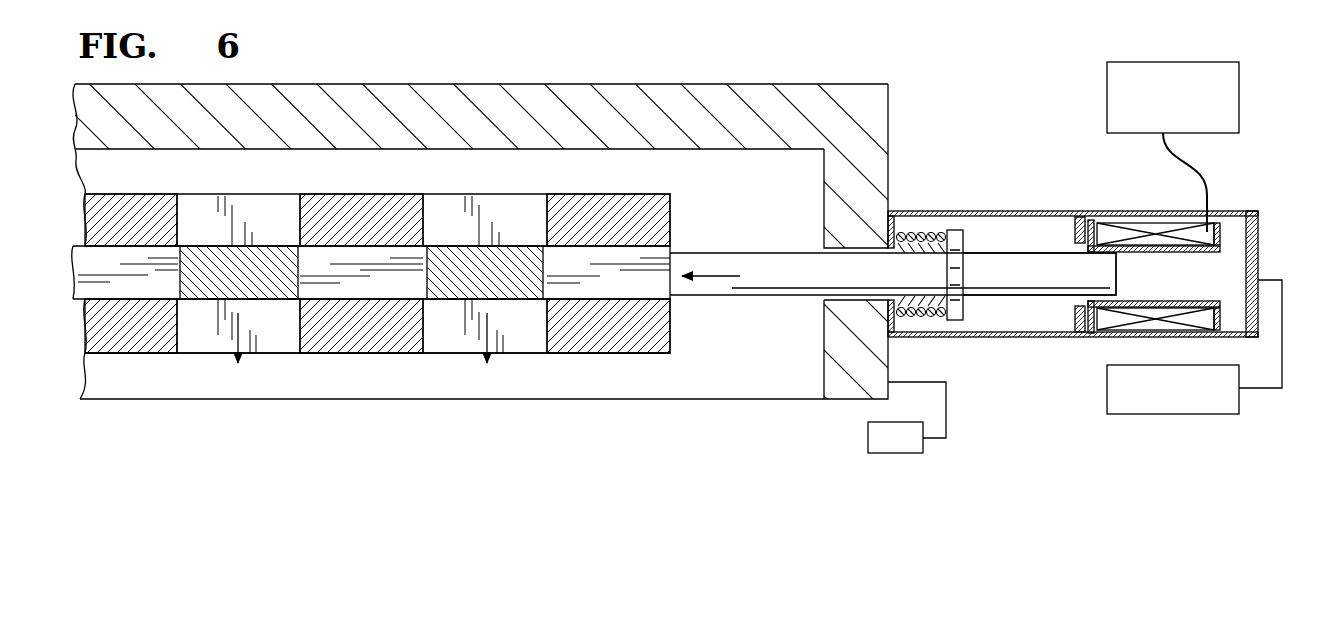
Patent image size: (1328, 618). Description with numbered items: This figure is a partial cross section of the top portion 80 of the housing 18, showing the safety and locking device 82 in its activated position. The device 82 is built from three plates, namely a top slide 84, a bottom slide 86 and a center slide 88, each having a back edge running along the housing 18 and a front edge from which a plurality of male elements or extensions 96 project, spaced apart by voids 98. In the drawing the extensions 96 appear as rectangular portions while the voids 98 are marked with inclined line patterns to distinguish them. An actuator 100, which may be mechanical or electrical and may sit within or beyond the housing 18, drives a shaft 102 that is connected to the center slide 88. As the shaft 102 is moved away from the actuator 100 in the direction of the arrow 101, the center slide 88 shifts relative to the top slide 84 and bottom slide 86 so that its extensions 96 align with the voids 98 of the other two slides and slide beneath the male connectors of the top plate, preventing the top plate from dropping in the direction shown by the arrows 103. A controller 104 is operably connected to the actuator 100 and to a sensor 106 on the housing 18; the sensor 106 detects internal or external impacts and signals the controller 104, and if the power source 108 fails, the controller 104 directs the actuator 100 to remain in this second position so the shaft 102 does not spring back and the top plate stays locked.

The housing 18 is at (360, 112).
The top portion of the housing 80 is at (745, 98).
The safety and locking device 82 is at (726, 298).
The top slide 84 is at (84, 214).
The bottom slide 86 is at (84, 349).
The center slide 88 is at (72, 288).
The male elements or extensions 96 is at (273, 212).
The voids 98 is at (160, 212).
The actuator 100 is at (941, 212).
The arrow 101 is at (700, 268).
The shaft 102 is at (1020, 278).
The arrows 103 is at (233, 353).
The controller 104 is at (1240, 400).
The sensor 106 is at (868, 440).
The power source 108 is at (1240, 82).